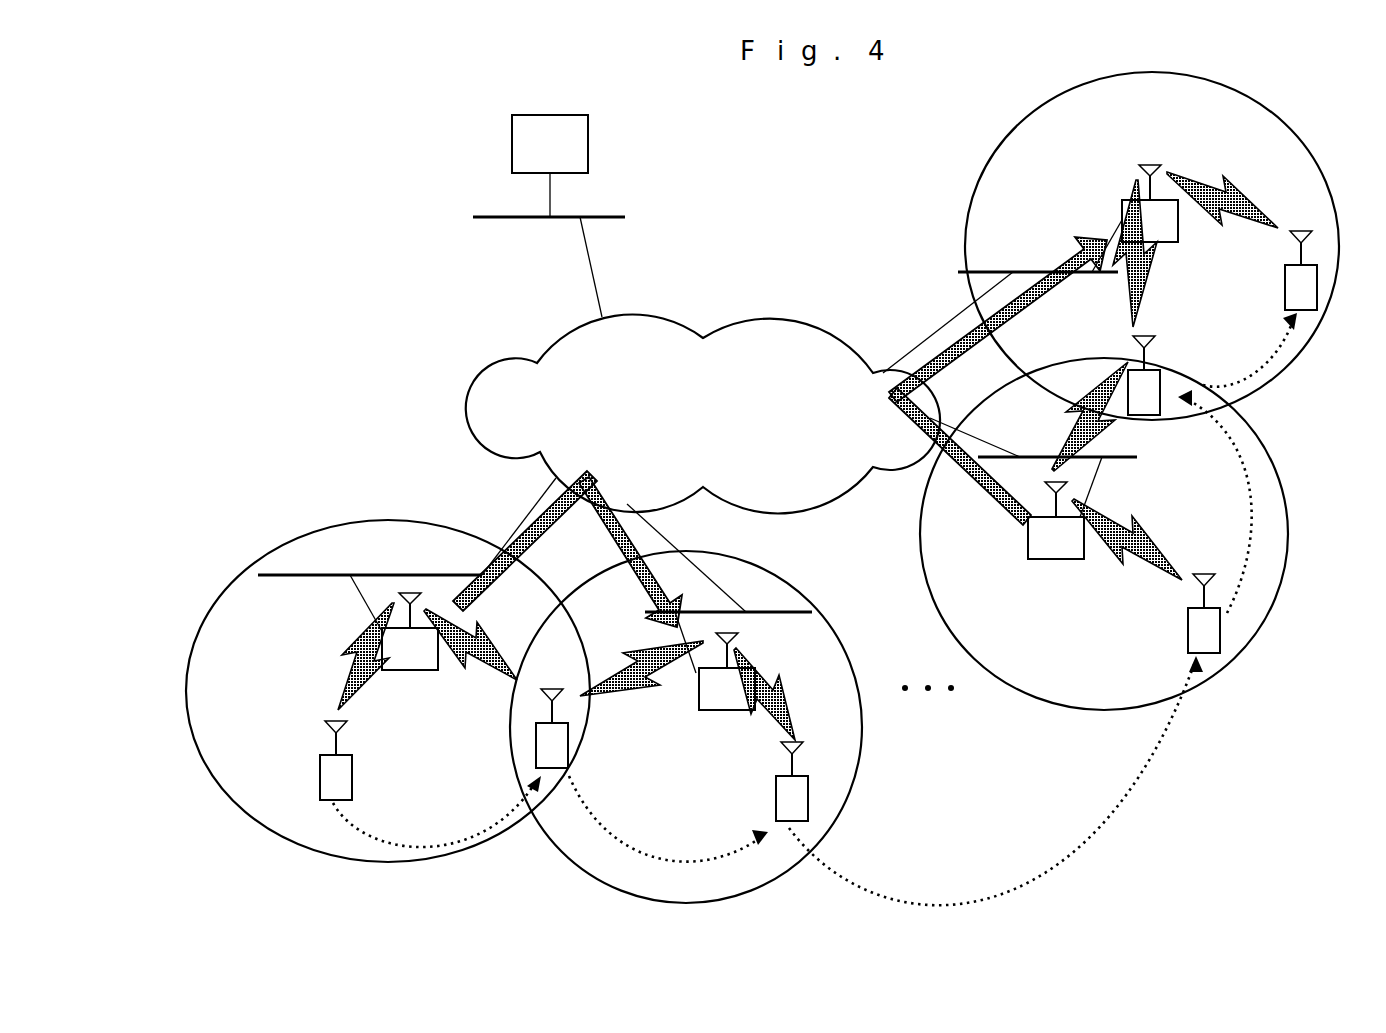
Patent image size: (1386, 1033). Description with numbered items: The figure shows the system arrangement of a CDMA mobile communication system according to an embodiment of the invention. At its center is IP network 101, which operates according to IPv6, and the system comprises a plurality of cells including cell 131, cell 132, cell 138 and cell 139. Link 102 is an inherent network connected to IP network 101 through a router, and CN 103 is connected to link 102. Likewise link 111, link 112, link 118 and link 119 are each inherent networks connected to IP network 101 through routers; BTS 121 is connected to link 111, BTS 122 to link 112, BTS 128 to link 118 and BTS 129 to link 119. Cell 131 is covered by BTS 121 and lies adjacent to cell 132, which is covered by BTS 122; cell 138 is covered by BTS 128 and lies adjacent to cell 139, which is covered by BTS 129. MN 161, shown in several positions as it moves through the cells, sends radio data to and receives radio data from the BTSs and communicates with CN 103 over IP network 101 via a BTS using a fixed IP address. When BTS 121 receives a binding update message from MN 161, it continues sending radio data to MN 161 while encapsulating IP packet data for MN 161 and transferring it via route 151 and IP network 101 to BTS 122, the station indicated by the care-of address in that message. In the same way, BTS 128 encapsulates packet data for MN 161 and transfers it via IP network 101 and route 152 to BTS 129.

The IP network 101 is at (500, 362).
The link 102 is at (603, 217).
The CN 103 is at (588, 147).
The link 111 is at (315, 575).
The link 112 is at (744, 612).
The link 118 is at (1120, 457).
The link 119 is at (1000, 272).
The BTS 121 is at (410, 670).
The BTS 122 is at (724, 709).
The BTS 128 is at (1050, 558).
The BTS 129 is at (1165, 198).
The cell 131 is at (230, 800).
The cell 132 is at (672, 903).
The cell 138 is at (1250, 645).
The cell 139 is at (1322, 177).
The route 151 is at (582, 516).
The route 152 is at (1053, 260).
The MN 161 is at (320, 767).